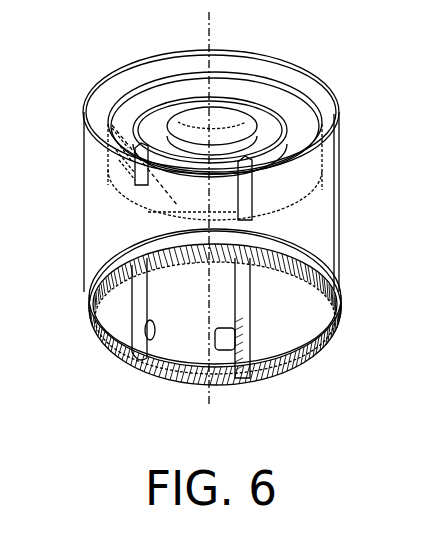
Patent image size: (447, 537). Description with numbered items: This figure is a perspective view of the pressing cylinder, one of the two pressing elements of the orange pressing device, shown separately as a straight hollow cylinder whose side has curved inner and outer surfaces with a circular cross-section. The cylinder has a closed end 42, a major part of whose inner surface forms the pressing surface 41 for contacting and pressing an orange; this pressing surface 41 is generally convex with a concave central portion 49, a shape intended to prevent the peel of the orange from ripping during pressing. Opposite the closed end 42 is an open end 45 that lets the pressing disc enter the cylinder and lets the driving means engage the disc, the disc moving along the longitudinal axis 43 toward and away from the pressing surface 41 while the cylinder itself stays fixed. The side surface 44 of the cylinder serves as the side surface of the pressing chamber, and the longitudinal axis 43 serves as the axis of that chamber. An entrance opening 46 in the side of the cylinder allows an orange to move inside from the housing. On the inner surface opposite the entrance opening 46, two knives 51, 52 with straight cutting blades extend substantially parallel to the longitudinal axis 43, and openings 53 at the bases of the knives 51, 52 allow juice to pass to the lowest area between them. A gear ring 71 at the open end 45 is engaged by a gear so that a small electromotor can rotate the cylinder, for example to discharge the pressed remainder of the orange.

The pressing surface 41 is at (300, 122).
The closed end 42 is at (305, 81).
The longitudinal axis 43 is at (211, 23).
The side surface 44 is at (170, 188).
The open end 45 is at (333, 290).
The entrance opening 46 is at (272, 192).
The concave central portion 49 is at (228, 126).
The knife 51 is at (150, 300).
The knife 52 is at (250, 310).
The openings 53 is at (237, 206).
The gear ring 71 is at (296, 266).